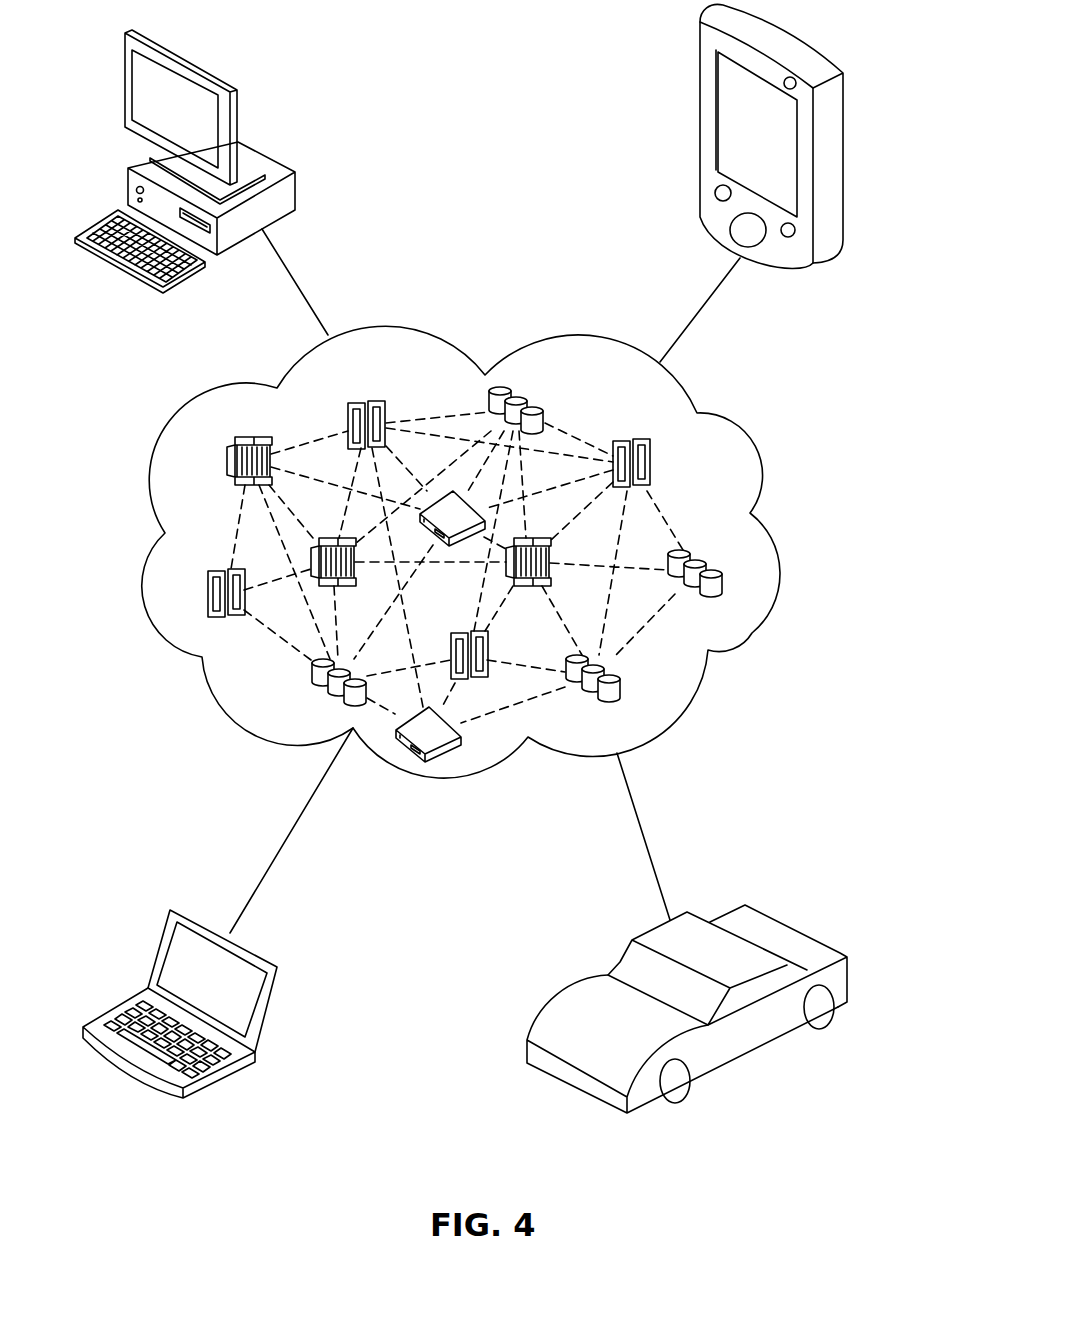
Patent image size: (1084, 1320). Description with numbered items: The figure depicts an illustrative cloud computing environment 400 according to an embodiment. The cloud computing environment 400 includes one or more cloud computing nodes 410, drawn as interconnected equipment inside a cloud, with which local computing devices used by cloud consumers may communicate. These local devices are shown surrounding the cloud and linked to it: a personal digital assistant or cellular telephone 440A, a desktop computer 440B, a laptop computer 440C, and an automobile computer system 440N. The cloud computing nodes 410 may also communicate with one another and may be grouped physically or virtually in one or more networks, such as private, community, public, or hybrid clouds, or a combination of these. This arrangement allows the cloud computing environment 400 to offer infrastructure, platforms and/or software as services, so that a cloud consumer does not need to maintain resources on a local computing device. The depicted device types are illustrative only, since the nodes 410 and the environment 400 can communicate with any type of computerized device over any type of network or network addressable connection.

The cloud computing environment 400 is at (752, 633).
The cloud computing nodes 410 is at (703, 488).
The personal digital assistant (PDA) or cellular telephone 440A is at (700, 87).
The desktop computer 440B is at (297, 188).
The laptop computer 440C is at (280, 978).
The automobile computer system 440N is at (850, 977).